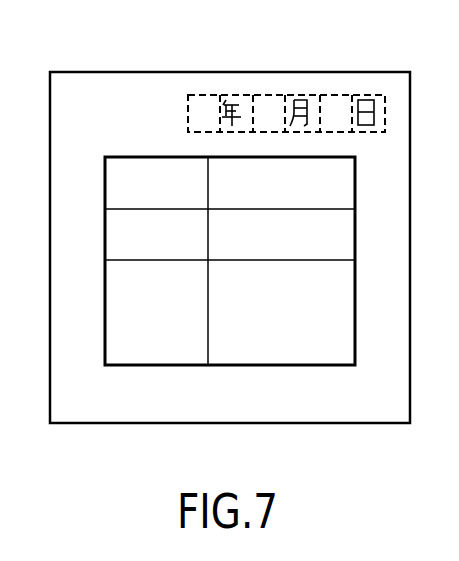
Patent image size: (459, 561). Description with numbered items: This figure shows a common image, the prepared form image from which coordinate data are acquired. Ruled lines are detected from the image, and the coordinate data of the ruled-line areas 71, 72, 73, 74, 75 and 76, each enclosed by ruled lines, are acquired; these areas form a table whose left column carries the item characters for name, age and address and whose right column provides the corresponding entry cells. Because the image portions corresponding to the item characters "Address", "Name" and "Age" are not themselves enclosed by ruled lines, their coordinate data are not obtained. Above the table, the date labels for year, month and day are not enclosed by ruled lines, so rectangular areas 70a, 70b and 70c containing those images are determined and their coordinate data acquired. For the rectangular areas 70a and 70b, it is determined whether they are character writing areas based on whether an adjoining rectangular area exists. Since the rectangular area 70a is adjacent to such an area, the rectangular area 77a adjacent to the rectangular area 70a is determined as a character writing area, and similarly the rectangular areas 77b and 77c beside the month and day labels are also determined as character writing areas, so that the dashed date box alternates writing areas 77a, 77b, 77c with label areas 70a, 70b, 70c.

The rectangular area 70a is at (228, 97).
The rectangular area 70b is at (302, 97).
The rectangular area 70c is at (370, 97).
The rectangular area (character writing area) 77a is at (192, 95).
The rectangular area (character writing area) 77b is at (270, 103).
The rectangular area (character writing area) 77c is at (342, 105).
The ruled-line area 71 is at (356, 183).
The ruled-line area 72 is at (356, 237).
The ruled-line area 73 is at (356, 303).
The ruled-line area 74 is at (103, 185).
The ruled-line area 75 is at (103, 240).
The ruled-line area 76 is at (103, 305).